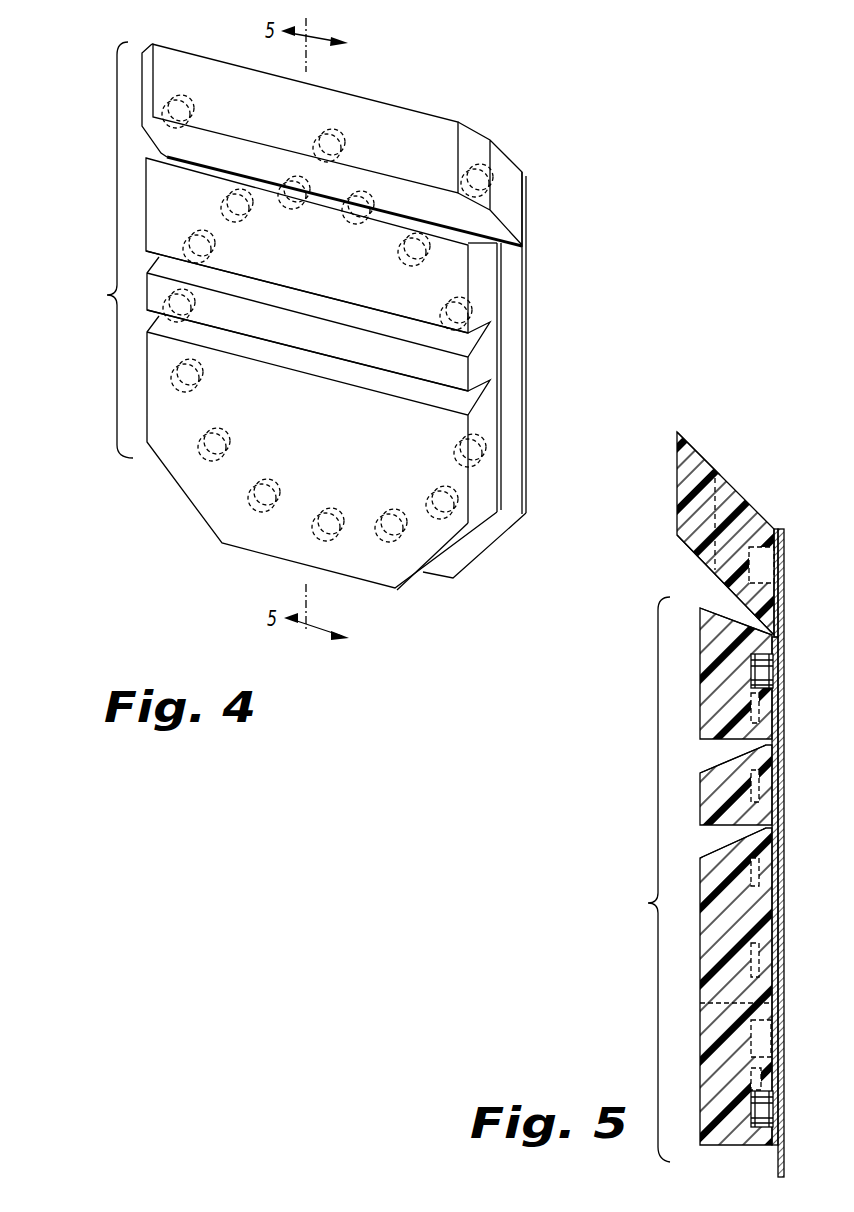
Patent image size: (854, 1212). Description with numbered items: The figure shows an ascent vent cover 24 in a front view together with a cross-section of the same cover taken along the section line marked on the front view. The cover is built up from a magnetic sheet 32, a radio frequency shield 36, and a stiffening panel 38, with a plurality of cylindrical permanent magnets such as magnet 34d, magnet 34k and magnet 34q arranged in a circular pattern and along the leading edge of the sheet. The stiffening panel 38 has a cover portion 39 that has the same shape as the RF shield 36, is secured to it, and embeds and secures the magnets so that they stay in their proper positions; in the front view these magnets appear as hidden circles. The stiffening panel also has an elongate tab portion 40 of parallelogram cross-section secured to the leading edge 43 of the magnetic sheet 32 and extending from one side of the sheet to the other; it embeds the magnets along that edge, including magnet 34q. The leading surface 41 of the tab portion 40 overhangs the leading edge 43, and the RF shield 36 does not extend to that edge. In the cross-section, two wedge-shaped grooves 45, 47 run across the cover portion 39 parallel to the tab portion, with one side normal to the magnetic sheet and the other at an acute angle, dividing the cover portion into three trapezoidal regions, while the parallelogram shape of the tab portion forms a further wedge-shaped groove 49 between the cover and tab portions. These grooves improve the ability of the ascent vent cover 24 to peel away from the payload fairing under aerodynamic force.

In FIG. 4, the ascent vent cover 24 is at (90, 257).
In FIG. 4, the stiffening panel 38 is at (103, 250).
In FIG. 4, the tab portion 40 is at (507, 192).
In FIG. 5, the tab portion 40 is at (745, 499).
In FIG. 5, the leading surface 41 is at (714, 453).
In FIG. 4, the leading edge 43 is at (522, 172).
In FIG. 5, the leading edge 43 is at (779, 531).
In FIG. 4, the wedge-shaped groove 49 is at (494, 231).
In FIG. 5, the wedge-shaped groove 49 is at (702, 592).
In FIG. 4, the cover portion 39 is at (487, 290).
In FIG. 5, the cover portion 39 is at (701, 896).
In FIG. 4, the wedge-shaped groove 45 is at (472, 339).
In FIG. 5, the wedge-shaped groove 45 is at (693, 750).
In FIG. 4, the wedge-shaped groove 47 is at (472, 405).
In FIG. 5, the wedge-shaped groove 47 is at (693, 838).
In FIG. 4, the magnetic sheet 32 is at (537, 353).
In FIG. 5, the magnetic sheet 32 is at (779, 1140).
In FIG. 4, the radio frequency (RF) shield 36 is at (500, 470).
In FIG. 5, the radio frequency (RF) shield 36 is at (779, 1033).
In FIG. 5, the magnet 34q is at (781, 572).
In FIG. 5, the magnet 34k is at (764, 668).
In FIG. 5, the magnet 34d is at (768, 1118).